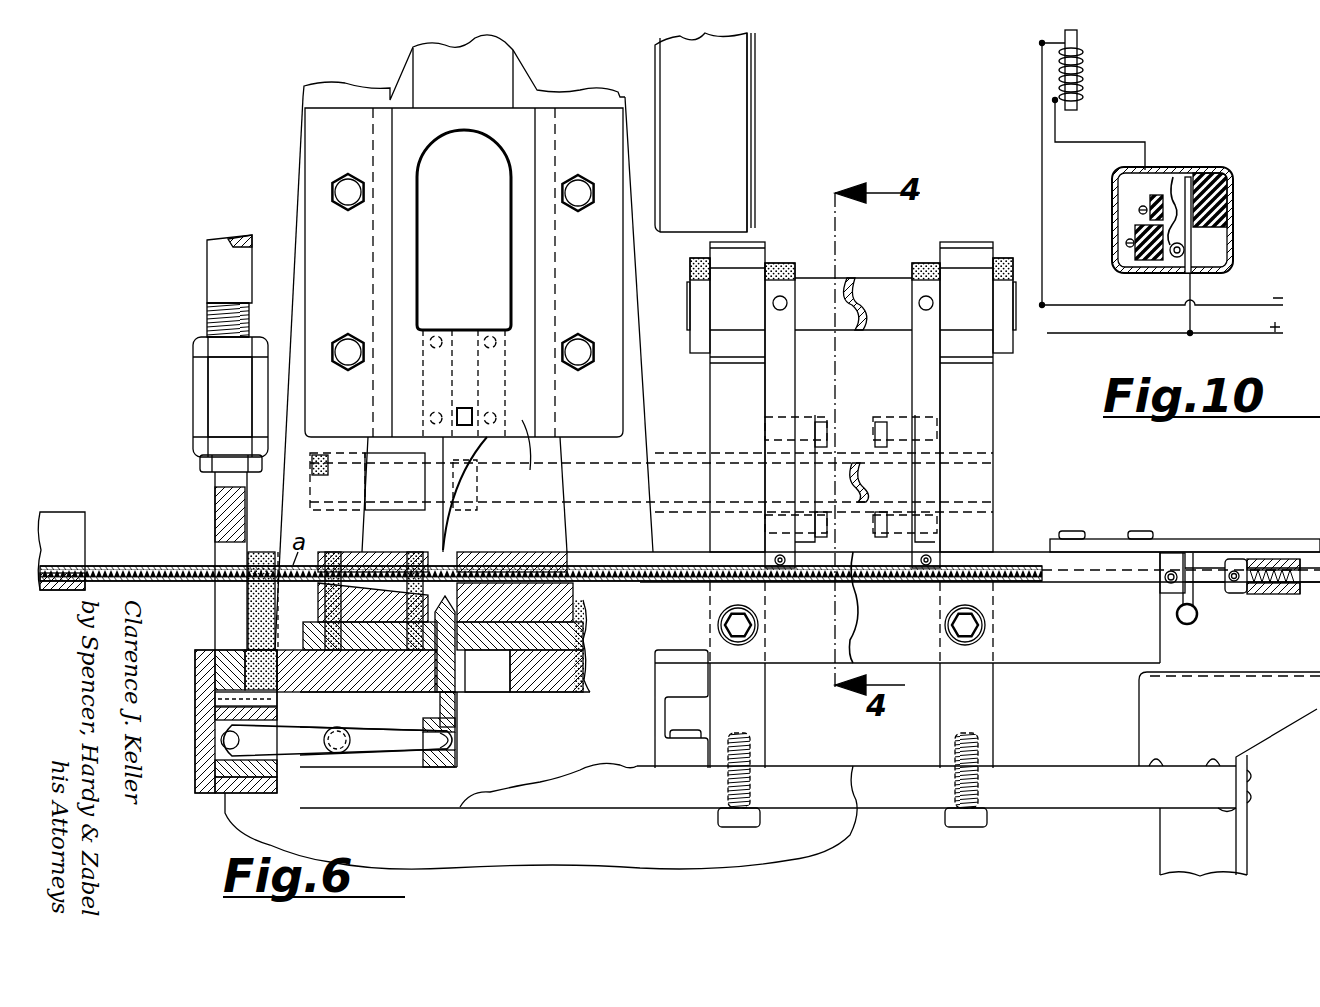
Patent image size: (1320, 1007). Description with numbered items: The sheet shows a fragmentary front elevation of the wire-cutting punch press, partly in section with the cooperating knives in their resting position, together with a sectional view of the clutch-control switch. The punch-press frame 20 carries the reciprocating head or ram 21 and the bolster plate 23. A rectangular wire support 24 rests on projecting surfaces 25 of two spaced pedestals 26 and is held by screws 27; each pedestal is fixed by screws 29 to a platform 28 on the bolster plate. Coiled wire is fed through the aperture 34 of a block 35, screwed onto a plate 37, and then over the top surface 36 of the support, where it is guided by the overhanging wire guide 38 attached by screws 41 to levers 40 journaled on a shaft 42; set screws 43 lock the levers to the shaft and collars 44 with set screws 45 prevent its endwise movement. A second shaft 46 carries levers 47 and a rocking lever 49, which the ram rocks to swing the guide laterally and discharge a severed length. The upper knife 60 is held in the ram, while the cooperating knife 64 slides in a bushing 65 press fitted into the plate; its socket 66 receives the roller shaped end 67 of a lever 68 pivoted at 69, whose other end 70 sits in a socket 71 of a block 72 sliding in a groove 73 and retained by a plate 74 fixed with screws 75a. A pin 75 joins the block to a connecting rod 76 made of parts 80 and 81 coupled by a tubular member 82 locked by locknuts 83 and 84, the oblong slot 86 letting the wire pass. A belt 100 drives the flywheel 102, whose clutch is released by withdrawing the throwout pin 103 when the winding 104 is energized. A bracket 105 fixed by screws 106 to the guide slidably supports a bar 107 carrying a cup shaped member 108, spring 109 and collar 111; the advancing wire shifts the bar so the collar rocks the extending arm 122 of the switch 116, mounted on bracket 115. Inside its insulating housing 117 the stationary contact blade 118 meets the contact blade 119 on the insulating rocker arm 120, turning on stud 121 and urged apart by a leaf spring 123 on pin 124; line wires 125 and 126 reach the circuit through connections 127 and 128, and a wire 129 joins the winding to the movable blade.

In FIG. 6, the punch-press frame 20 is at (298, 245).
In FIG. 6, the head or ram 21 is at (527, 457).
In FIG. 6, the bolster plate 23 is at (643, 663).
In FIG. 6, the rectangular bar or wire support 24 is at (1067, 650).
In FIG. 6, the projecting surfaces 25 is at (750, 665).
In FIG. 6, the pedestals 26 is at (728, 401).
In FIG. 6, the screws 27 is at (745, 623).
In FIG. 6, the platform 28 is at (1078, 800).
In FIG. 6, the screws 29 is at (730, 820).
In FIG. 6, the aperture 34 is at (400, 552).
In FIG. 6, the block 35 is at (347, 603).
In FIG. 6, the top surface 36 is at (1035, 568).
In FIG. 6, the plate 37 is at (498, 647).
In FIG. 6, the overhanging wire guide 38 is at (1110, 557).
In FIG. 6, the levers 40 is at (923, 373).
In FIG. 6, the screws 41 is at (773, 556).
In FIG. 6, the shaft 42 is at (872, 293).
In FIG. 6, the set screws 43 is at (783, 265).
In FIG. 6, the collars 44 is at (705, 340).
In FIG. 6, the set screws 45 is at (690, 266).
In FIG. 6, the shaft 46 is at (875, 488).
In FIG. 6, the levers 47 is at (840, 438).
In FIG. 6, the rocking lever 49 is at (460, 500).
In FIG. 6, the knife or notching member 60 is at (447, 510).
In FIG. 6, the cooperating knife or notching member 64 is at (440, 706).
In FIG. 6, the bushing 65 is at (465, 673).
In FIG. 6, the socket 66 is at (427, 752).
In FIG. 6, the roller shaped end 67 is at (447, 742).
In FIG. 6, the lever 68 is at (378, 737).
In FIG. 6, the pivot 69 is at (337, 748).
In FIG. 6, the other end 70 is at (267, 725).
In FIG. 6, the socket 71 is at (227, 737).
In FIG. 6, the block 72 is at (245, 760).
In FIG. 6, the groove 73 is at (280, 650).
In FIG. 6, the plate 74 is at (203, 658).
In FIG. 6, the pin 75 is at (250, 697).
In FIG. 6, the screws 75a is at (193, 752).
In FIG. 6, the connecting rod 76 is at (230, 520).
In FIG. 6, the part 80 is at (232, 645).
In FIG. 6, the part 81 is at (235, 263).
In FIG. 6, the tubular member 82 is at (222, 410).
In FIG. 6, the locknut 83 is at (215, 447).
In FIG. 6, the locknut 84 is at (201, 348).
In FIG. 6, the oblong slot 86 is at (228, 558).
In FIG. 6, the belt 100 is at (737, 128).
In FIG. 6, the flywheel 102 is at (758, 135).
In FIG. 6, the bracket 105 is at (1211, 544).
In FIG. 6, the screws 106 is at (1073, 531).
In FIG. 6, the bar 107 is at (1085, 576).
In FIG. 6, the cup shaped member 108 is at (1242, 555).
In FIG. 6, the spring 109 is at (1278, 586).
In FIG. 6, the collar 111 is at (1174, 562).
In FIG. 6, the bracket 115 is at (1156, 733).
In FIG. 6, the extending arm 122 is at (1190, 618).
In FIG. 10, the throwout pin 103 is at (1077, 37).
In FIG. 10, the electro-magnetic winding 104 is at (1084, 64).
In FIG. 10, the switch 116 is at (1233, 240).
In FIG. 10, the insulating housing 117 is at (1225, 185).
In FIG. 10, the stationary contact blade 118 is at (1193, 172).
In FIG. 10, the contact blade 119 is at (1173, 178).
In FIG. 10, the insulating rocker arm 120 is at (1135, 235).
In FIG. 10, the stud 121 is at (1140, 262).
In FIG. 10, the leaf spring 123 is at (1163, 262).
In FIG. 10, the pin 124 is at (1184, 252).
In FIG. 10, the line wire 125 is at (1253, 305).
In FIG. 10, the line wire 126 is at (1260, 333).
In FIG. 10, the connection 127 is at (1192, 290).
In FIG. 10, the connection 128 is at (1042, 283).
In FIG. 10, the wire 129 is at (1099, 137).